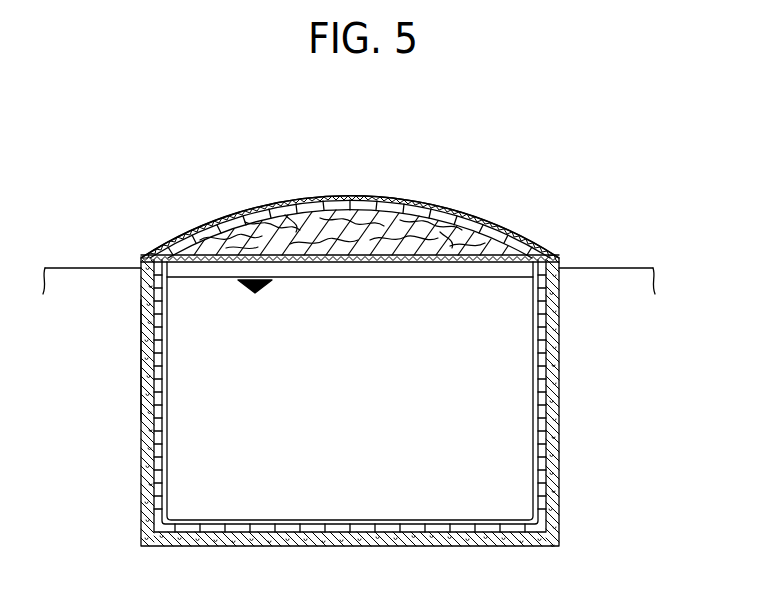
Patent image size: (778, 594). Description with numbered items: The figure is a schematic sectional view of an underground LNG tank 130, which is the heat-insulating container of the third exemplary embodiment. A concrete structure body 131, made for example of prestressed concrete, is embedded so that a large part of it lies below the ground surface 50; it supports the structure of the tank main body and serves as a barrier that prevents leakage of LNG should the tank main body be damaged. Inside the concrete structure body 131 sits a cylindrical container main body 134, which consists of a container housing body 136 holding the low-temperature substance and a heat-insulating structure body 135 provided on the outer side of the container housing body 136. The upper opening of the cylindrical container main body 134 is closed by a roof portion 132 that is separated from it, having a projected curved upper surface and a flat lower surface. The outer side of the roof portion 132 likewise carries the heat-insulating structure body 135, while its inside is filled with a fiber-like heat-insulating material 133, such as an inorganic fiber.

The ground surface 50 is at (63, 267).
The underground LNG tank 130 is at (433, 158).
The concrete structure body 131 is at (562, 348).
The roof portion 132 is at (387, 195).
The fiber-like heat-insulating material 133 is at (470, 216).
The cylindrical container main body 134 is at (141, 333).
The heat-insulating structure body 135 is at (230, 213).
The container housing body 136 is at (142, 368).